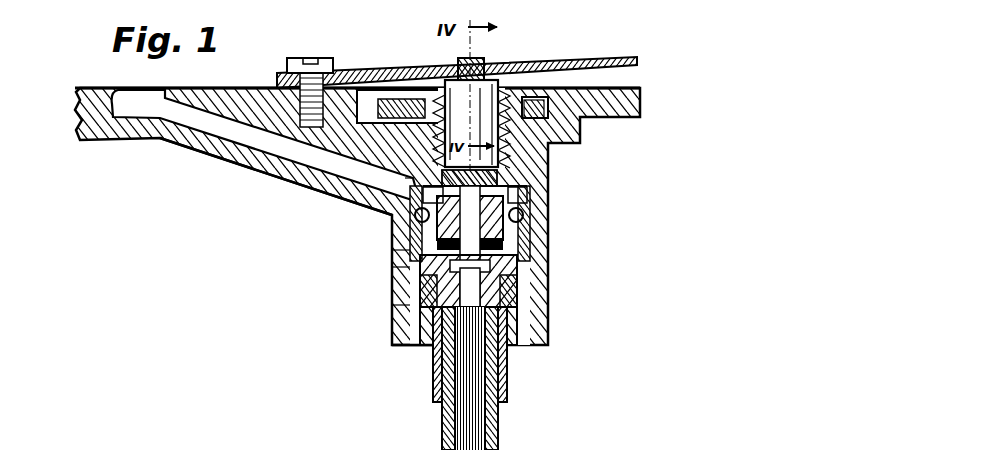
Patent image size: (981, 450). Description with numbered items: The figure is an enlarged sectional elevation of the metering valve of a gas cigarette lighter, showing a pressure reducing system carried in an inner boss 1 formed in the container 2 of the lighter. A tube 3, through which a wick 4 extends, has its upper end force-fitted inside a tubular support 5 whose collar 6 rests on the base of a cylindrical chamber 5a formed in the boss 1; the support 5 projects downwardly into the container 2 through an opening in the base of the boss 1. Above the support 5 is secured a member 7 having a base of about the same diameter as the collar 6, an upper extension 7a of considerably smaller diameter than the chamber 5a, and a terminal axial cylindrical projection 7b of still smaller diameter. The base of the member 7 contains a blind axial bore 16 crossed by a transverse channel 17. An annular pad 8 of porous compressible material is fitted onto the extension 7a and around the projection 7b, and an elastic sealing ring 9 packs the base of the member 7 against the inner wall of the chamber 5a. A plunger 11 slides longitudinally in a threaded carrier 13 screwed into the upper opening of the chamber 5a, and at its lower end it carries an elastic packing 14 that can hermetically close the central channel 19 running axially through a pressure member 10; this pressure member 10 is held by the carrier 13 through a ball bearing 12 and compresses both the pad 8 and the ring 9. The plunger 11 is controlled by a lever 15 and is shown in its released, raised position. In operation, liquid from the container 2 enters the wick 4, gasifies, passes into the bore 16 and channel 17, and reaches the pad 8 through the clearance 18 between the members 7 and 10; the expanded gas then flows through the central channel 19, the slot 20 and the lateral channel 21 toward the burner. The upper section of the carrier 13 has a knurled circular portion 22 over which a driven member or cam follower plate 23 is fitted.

The inner boss 1 is at (395, 335).
The container 2 is at (273, 170).
The tube 3 is at (497, 430).
The wick 4 is at (462, 427).
The tubular support 5 is at (508, 370).
The cylindrical chamber 5a is at (395, 292).
The collar 6 is at (550, 325).
The member 7 is at (550, 296).
The upper extension 7a is at (552, 283).
The axial cylindrical projection 7b is at (550, 224).
The annular pad 8 is at (550, 268).
The elastic sealing ring 9 is at (550, 281).
The pressure member 10 is at (550, 240).
The plunger 11 is at (500, 72).
The ball bearing 12 is at (550, 210).
The threaded carrier 13 is at (550, 158).
The elastic packing 14 is at (550, 185).
The lever 15 is at (616, 60).
The blind axial bore 16 is at (422, 338).
The transverse channel 17 is at (397, 305).
The clearance 18 is at (397, 267).
The central channel 19 is at (390, 250).
The slot 20 is at (372, 213).
The lateral channel 21 is at (230, 128).
The knurled circular portion 22 is at (410, 95).
The cam follower plate 23 is at (383, 85).